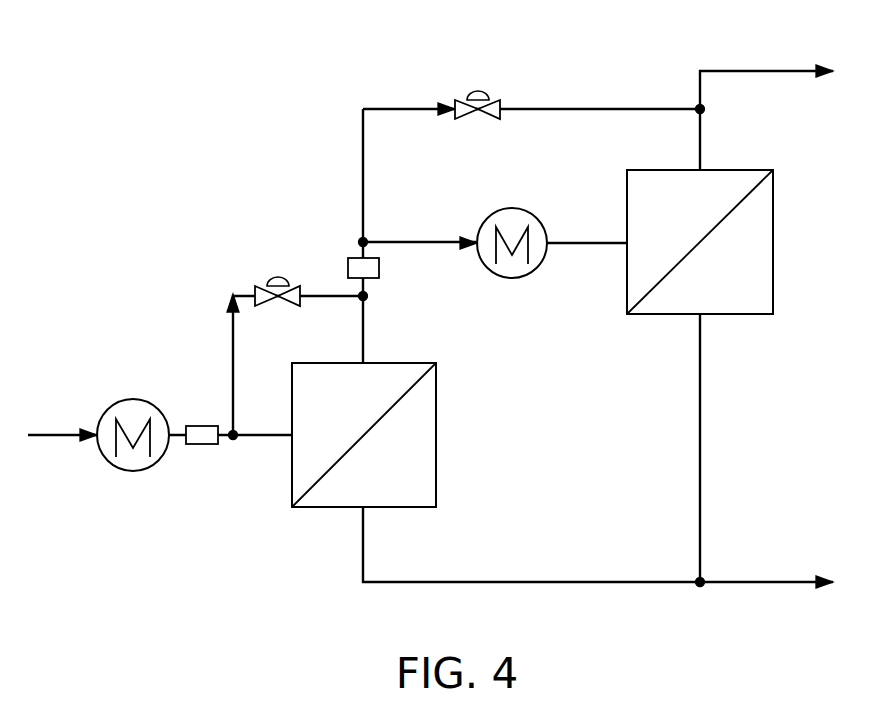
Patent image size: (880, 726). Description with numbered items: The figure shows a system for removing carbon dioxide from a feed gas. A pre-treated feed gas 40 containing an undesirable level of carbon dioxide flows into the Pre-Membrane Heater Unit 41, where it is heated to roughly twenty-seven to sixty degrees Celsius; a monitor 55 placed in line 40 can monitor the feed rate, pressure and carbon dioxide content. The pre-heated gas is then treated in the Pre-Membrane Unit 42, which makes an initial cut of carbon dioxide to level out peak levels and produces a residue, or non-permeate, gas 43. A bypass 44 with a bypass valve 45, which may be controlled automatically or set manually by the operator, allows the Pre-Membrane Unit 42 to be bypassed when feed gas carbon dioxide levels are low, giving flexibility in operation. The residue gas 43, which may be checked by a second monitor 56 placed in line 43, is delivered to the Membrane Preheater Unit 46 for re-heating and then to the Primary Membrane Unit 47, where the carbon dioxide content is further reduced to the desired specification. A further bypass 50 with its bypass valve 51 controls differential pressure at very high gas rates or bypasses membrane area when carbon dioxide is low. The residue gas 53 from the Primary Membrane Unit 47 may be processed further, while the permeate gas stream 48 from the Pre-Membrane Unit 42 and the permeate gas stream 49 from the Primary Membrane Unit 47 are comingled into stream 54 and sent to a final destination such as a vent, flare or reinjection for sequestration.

The pre-treated feed gas 40 is at (53, 433).
The Pre-Membrane Heater Unit 41 is at (133, 398).
The Pre-Membrane Unit 42 is at (364, 435).
The residue gas 43 is at (365, 334).
The bypass 44 is at (232, 335).
The bypass valve 45 is at (278, 275).
The Membrane Preheater Unit 46 is at (515, 208).
The Primary Membrane Unit 47 is at (700, 242).
The permeate gas stream 48 is at (365, 545).
The permeate gas stream 49 is at (703, 449).
The bypass 50 is at (401, 106).
The bypass valve 51 is at (478, 88).
The residue gas 53 is at (760, 68).
The comingled permeate stream 54 is at (766, 579).
The monitor 55 is at (206, 446).
The monitor 56 is at (380, 268).